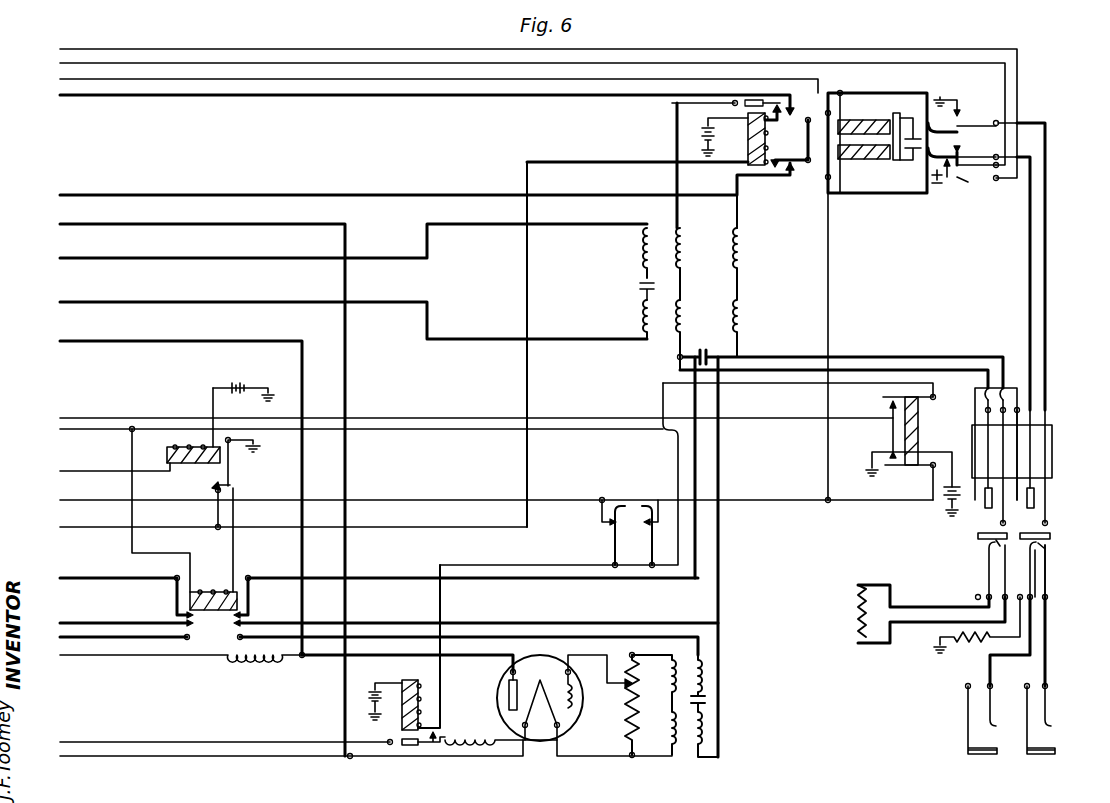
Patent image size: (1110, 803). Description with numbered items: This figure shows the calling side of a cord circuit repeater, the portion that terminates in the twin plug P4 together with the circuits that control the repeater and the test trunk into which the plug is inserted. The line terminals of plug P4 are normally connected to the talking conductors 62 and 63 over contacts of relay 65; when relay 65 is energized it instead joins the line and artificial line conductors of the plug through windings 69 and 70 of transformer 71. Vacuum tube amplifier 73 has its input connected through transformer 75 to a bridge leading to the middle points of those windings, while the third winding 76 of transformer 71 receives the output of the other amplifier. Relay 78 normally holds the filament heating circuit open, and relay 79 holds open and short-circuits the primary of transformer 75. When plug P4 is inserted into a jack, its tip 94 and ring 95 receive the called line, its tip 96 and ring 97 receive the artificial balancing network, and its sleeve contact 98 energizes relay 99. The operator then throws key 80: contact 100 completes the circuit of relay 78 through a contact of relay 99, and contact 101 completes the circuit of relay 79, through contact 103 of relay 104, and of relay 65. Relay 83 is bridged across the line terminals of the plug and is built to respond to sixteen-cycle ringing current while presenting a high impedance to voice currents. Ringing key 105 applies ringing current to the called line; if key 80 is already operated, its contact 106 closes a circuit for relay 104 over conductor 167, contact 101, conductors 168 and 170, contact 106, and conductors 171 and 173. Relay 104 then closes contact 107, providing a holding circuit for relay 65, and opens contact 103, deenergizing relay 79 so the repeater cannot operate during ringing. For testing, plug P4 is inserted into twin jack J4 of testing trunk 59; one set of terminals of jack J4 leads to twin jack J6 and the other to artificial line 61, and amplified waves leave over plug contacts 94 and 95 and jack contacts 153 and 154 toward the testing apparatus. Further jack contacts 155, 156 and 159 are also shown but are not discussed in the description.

The conductor 170 is at (88, 46).
The conductor 171 is at (200, 62).
The line conductor 62 is at (130, 97).
The line conductor 63 is at (124, 194).
The relay 65 is at (741, 133).
The relay 83 is at (868, 162).
The ringing key 105 is at (975, 128).
The contact of ringing key 106 is at (978, 185).
The winding of transformer 70 is at (672, 228).
The transformer 71 is at (697, 270).
The third winding of transformer 76 is at (640, 304).
The winding of transformer 69 is at (742, 305).
The conductor 167 is at (104, 411).
The conductor 168 is at (108, 431).
The conductor 173 is at (155, 474).
The relay 104 is at (193, 469).
The contact of relay 107 is at (232, 480).
The contact of relay 103 is at (232, 500).
The relay 79 is at (389, 612).
The relay 78 is at (408, 680).
The vacuum tube amplifier 73 is at (560, 718).
The transformer 75 is at (690, 728).
The key 80 is at (634, 537).
The contact of key 100 is at (600, 520).
The contact of key 101 is at (656, 512).
The relay 99 is at (903, 440).
The twin plug P4 is at (1052, 440).
The sleeve contact 98 is at (1020, 490).
The ring contact 95 is at (1036, 498).
The tip contact 94 is at (1048, 522).
The ring contact 97 is at (982, 500).
The tip contact 96 is at (985, 543).
The artificial line 61 is at (876, 592).
The twin jack J4 is at (991, 566).
The jack spring 159 is at (1040, 545).
The jack contact 154 is at (1032, 570).
The jack contact 153 is at (1047, 590).
The testing trunk 59 is at (1009, 692).
The jack spring 156 is at (1006, 740).
The jack spring 155 is at (1056, 718).
The twin jack J6 is at (1000, 778).